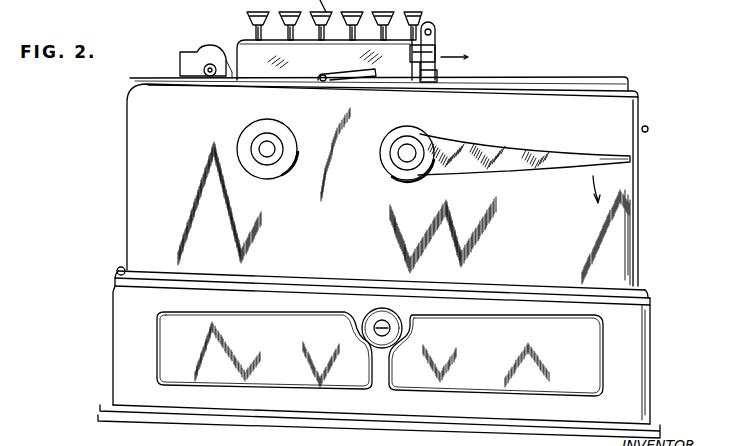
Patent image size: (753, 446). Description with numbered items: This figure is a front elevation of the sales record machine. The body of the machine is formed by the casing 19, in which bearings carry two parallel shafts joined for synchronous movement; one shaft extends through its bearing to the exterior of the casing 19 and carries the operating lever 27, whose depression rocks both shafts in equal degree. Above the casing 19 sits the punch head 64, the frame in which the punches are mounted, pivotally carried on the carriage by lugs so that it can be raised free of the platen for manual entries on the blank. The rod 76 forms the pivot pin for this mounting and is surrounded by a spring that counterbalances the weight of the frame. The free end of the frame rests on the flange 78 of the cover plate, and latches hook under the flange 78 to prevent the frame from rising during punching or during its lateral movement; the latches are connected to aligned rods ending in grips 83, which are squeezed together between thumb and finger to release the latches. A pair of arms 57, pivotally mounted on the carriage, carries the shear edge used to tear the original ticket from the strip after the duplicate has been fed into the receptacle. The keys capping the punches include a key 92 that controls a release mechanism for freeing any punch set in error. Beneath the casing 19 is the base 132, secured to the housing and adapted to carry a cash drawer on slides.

The casing 19 is at (356, 225).
The operating lever 27 is at (534, 157).
The arms 57 is at (363, 81).
The punch head 64 is at (340, 60).
The rod 76 is at (210, 76).
The flange 78 is at (537, 80).
The grips 83 is at (437, 18).
The key 92 is at (418, 22).
The base 132 is at (125, 326).